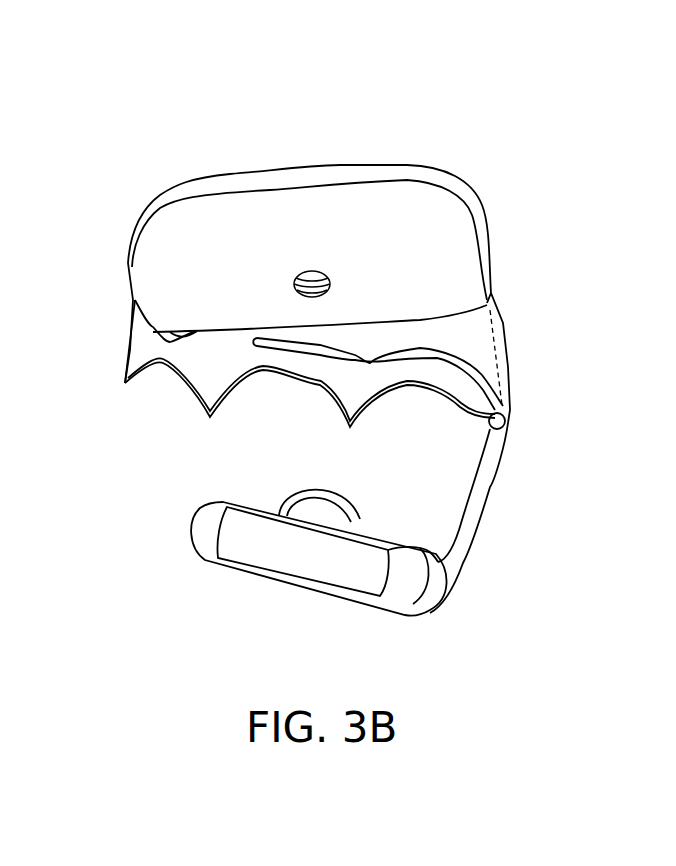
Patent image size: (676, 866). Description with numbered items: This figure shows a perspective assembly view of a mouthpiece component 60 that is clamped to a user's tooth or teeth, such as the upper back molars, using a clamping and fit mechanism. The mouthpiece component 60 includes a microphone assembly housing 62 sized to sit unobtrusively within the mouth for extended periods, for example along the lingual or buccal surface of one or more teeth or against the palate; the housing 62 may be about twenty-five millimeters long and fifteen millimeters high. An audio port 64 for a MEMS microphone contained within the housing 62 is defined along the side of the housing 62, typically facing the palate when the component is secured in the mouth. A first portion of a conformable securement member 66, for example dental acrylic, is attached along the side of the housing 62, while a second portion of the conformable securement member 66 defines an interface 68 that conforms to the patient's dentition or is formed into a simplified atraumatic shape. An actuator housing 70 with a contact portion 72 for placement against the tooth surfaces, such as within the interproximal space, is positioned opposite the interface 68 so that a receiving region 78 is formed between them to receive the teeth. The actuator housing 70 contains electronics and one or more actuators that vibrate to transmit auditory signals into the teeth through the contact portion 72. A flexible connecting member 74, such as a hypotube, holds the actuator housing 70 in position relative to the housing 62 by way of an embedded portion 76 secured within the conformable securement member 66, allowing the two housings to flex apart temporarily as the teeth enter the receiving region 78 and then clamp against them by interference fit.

The mouthpiece component 60 is at (97, 70).
The microphone assembly housing 62 is at (149, 196).
The audio port 64 is at (312, 271).
The conformable securement member 66 is at (493, 320).
The interface 68 is at (307, 388).
The actuator housing 70 is at (240, 580).
The contact portion 72 is at (357, 511).
The connecting member 74 is at (495, 475).
The embedded portion 76 is at (503, 393).
The receiving region 78 is at (188, 472).